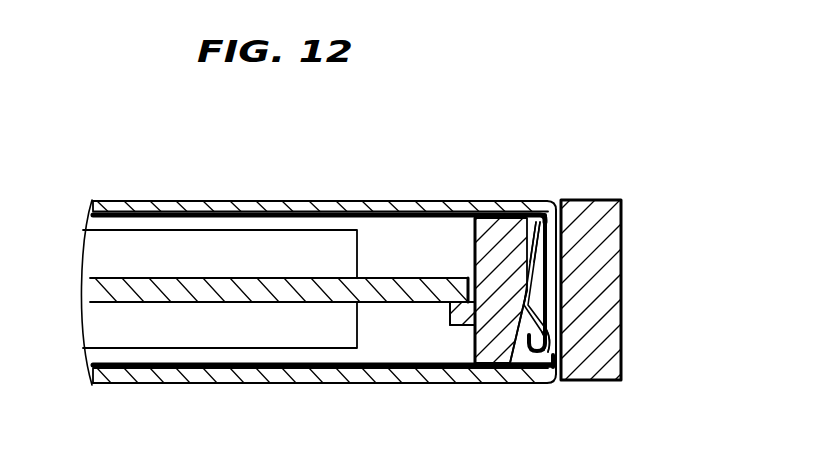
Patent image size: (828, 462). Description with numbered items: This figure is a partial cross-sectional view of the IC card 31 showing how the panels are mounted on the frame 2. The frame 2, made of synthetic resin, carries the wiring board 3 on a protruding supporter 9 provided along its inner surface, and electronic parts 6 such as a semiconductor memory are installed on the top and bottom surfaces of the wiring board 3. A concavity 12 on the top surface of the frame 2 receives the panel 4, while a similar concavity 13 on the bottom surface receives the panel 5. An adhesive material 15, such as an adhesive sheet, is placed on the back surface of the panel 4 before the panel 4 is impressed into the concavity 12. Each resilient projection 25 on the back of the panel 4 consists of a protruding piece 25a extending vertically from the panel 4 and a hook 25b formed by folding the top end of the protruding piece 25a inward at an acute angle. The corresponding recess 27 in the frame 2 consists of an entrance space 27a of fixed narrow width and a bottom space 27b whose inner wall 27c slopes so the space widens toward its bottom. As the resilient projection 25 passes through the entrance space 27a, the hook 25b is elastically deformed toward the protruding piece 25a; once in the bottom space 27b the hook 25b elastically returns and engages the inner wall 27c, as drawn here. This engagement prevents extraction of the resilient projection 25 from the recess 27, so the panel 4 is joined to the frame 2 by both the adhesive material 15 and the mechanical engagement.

The frame 2 is at (603, 360).
The wiring board 3 is at (270, 285).
The panel 4 is at (194, 207).
The panel 5 is at (228, 383).
The electronic parts 6 is at (132, 252).
The protruding supporter 9 is at (450, 326).
The concavity 12 is at (482, 222).
The concavity 13 is at (508, 322).
The adhesive material 15 is at (416, 218).
The resilient projection 25 is at (548, 310).
The protruding piece 25a is at (552, 262).
The hook 25b is at (546, 358).
The recess 27 is at (558, 248).
The entrance space 27a is at (534, 222).
The bottom space 27b is at (575, 382).
The inner wall 27c is at (512, 355).
The IC card 31 is at (648, 176).